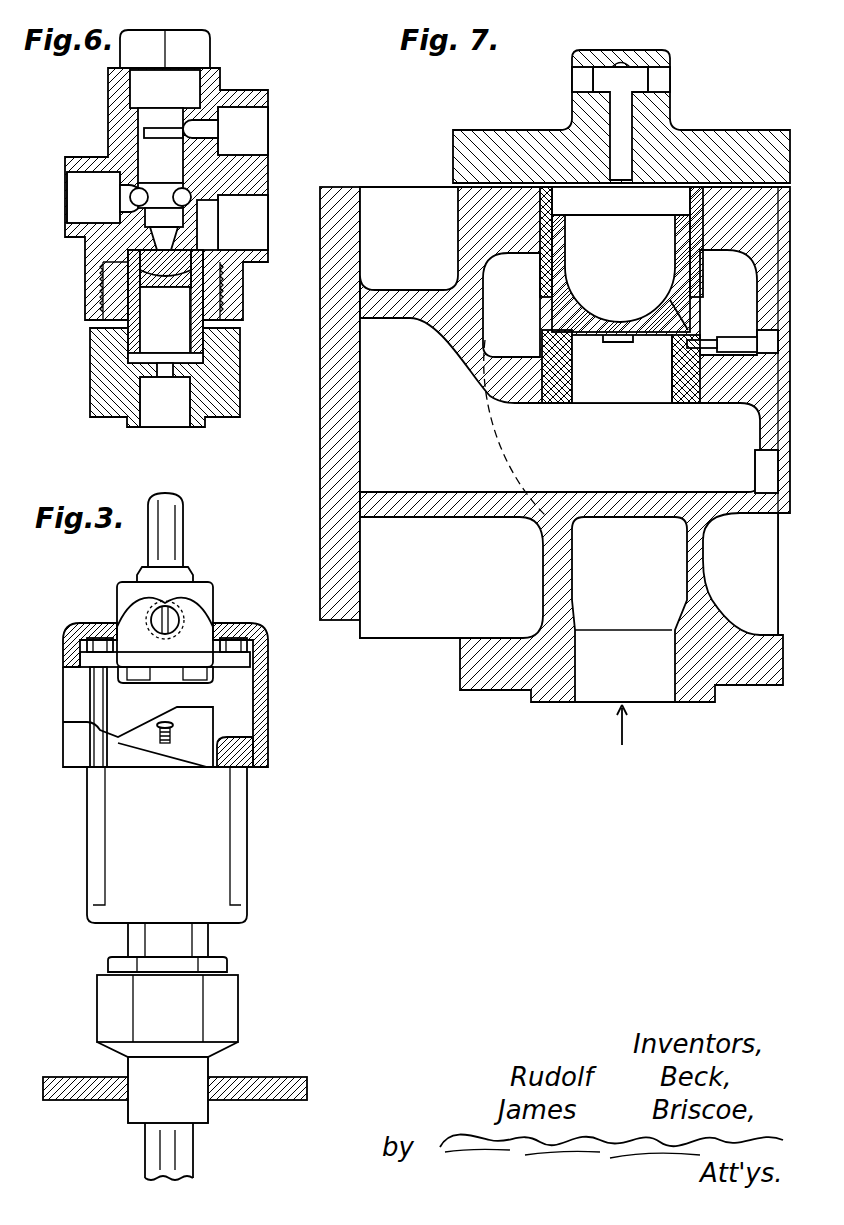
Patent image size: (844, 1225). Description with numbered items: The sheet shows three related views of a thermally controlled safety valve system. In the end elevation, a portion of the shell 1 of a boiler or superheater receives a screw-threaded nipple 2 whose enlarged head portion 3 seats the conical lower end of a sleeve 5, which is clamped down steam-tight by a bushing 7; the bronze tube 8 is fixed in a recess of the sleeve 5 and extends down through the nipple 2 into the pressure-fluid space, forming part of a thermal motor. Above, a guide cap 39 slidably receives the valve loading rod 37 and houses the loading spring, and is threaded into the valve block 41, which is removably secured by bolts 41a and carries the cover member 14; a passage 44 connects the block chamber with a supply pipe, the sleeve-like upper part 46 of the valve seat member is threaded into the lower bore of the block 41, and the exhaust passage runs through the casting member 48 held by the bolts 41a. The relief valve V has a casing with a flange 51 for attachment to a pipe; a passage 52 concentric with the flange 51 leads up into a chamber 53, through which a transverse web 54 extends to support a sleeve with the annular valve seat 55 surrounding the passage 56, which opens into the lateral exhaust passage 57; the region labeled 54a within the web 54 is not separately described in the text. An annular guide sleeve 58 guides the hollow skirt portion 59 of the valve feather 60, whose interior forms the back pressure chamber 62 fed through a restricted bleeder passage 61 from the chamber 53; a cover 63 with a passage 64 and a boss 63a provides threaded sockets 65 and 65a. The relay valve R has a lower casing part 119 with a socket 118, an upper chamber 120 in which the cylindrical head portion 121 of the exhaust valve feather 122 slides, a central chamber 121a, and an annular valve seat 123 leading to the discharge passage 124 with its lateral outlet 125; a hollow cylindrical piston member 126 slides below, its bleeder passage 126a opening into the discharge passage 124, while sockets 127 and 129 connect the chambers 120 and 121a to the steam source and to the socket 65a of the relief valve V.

In FIG. 3, the shell 1 is at (255, 1085).
In FIG. 3, the screw-threaded nipple 2 is at (130, 1113).
In FIG. 3, the enlarged head portion 3 is at (228, 998).
In FIG. 3, the sleeve 5 is at (168, 940).
In FIG. 3, the bushing 7 is at (223, 963).
In FIG. 3, the tube 8 is at (153, 1148).
In FIG. 3, the cover member 14 is at (262, 655).
In FIG. 3, the valve loading rod 37 is at (172, 632).
In FIG. 3, the guide cap 39 is at (180, 532).
In FIG. 3, the valve block 41 is at (205, 600).
In FIG. 3, the bolts 41a is at (85, 647).
In FIG. 3, the passage 44 is at (152, 615).
In FIG. 3, the sleeve-like upper part 46 is at (152, 672).
In FIG. 3, the member 48 is at (235, 700).
In FIG. 7, the flange 51 is at (723, 643).
In FIG. 7, the passage 52 is at (570, 588).
In FIG. 7, the chamber 53 is at (750, 283).
In FIG. 7, the transverse web 54 is at (720, 395).
In FIG. 7, the valve chamber 54a is at (572, 358).
In FIG. 7, the annular valve seat 55 is at (546, 350).
In FIG. 7, the passage 56 is at (610, 398).
In FIG. 7, the exhaust passage 57 is at (335, 371).
In FIG. 7, the annular guide sleeve 58 is at (560, 248).
In FIG. 7, the hollow skirt portion 59 is at (565, 272).
In FIG. 7, the valve feather 60 is at (587, 320).
In FIG. 7, the restricted bleeder passage 61 is at (687, 318).
In FIG. 7, the back pressure chamber 62 is at (621, 201).
In FIG. 7, the cover 63 is at (462, 155).
In FIG. 7, the boss 63a is at (577, 110).
In FIG. 7, the passage 64 is at (627, 117).
In FIG. 7, the screw-threaded socket 65 is at (573, 75).
In FIG. 7, the screw-threaded socket 65a is at (672, 78).
In FIG. 6, the screw-threaded socket 118 is at (152, 415).
In FIG. 6, the lower part of casing 119 is at (103, 375).
In FIG. 6, the chamber 120 is at (143, 118).
In FIG. 6, the cylindrical head portion 121 is at (147, 148).
In FIG. 6, the chamber 121a is at (148, 195).
In FIG. 6, the exhaust valve feather 122 is at (164, 217).
In FIG. 6, the annular valve seat 123 is at (147, 240).
In FIG. 6, the discharge passage 124 is at (193, 262).
In FIG. 6, the lateral outlet 125 is at (255, 203).
In FIG. 6, the hollow cylindrical piston member 126 is at (133, 327).
In FIG. 6, the restricted bleeder passage 126a is at (181, 287).
In FIG. 6, the screw-threaded socket 127 is at (257, 112).
In FIG. 6, the threaded socket 129 is at (75, 183).
In FIG. 6, the relay valve R is at (291, 160).
In FIG. 7, the relief valve V is at (436, 626).